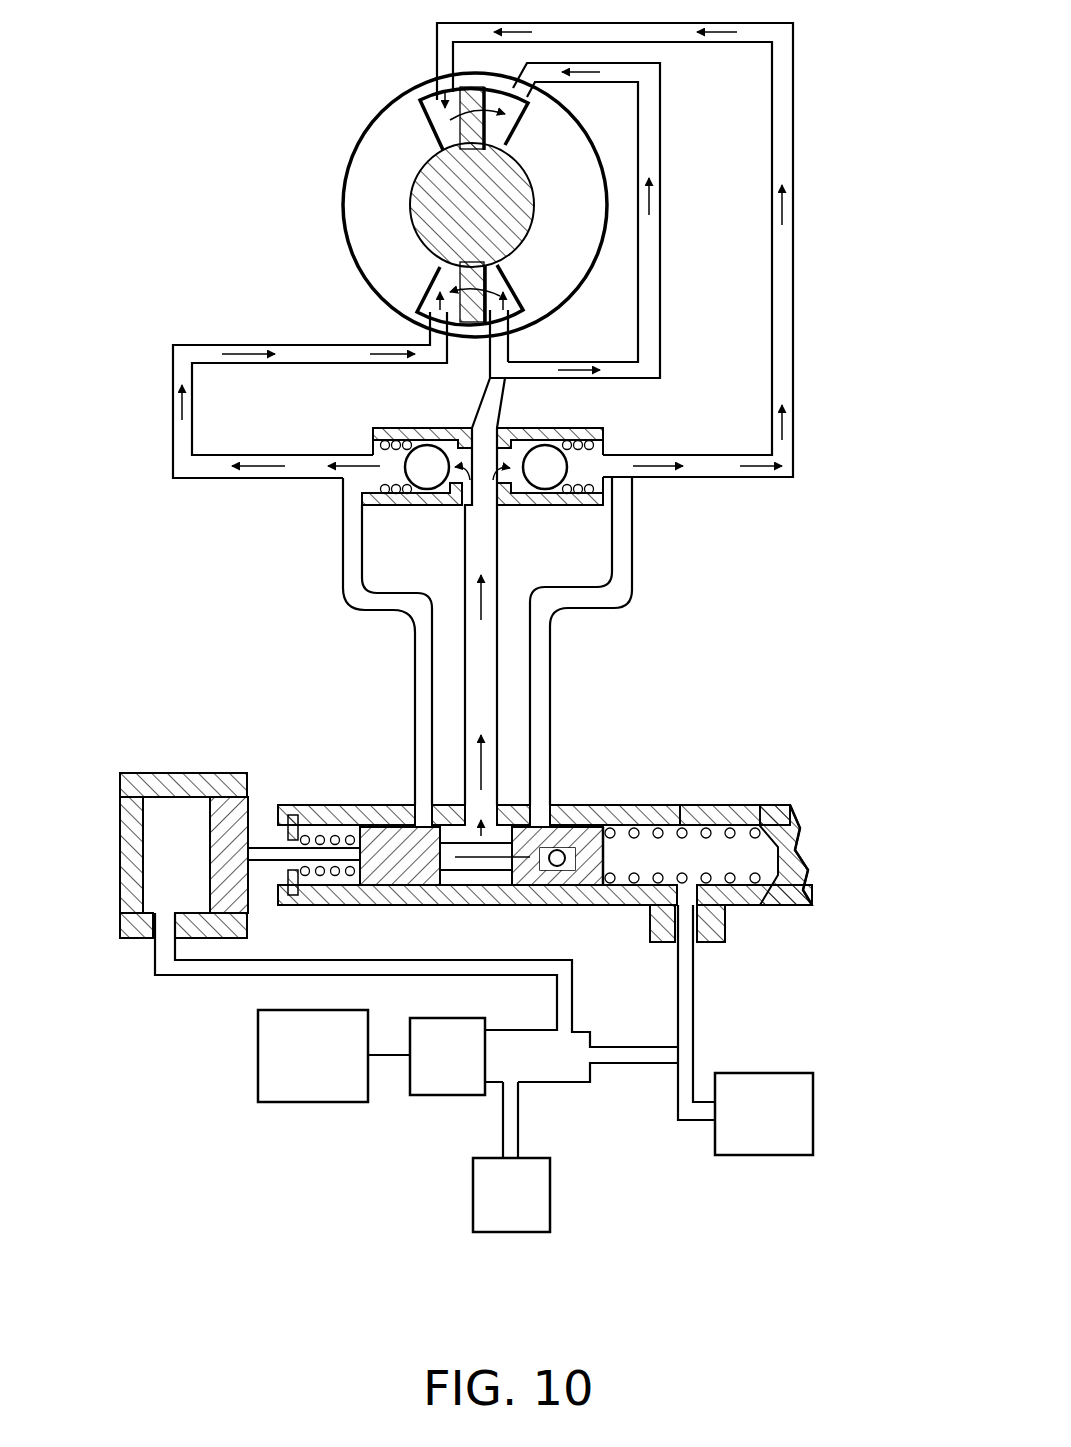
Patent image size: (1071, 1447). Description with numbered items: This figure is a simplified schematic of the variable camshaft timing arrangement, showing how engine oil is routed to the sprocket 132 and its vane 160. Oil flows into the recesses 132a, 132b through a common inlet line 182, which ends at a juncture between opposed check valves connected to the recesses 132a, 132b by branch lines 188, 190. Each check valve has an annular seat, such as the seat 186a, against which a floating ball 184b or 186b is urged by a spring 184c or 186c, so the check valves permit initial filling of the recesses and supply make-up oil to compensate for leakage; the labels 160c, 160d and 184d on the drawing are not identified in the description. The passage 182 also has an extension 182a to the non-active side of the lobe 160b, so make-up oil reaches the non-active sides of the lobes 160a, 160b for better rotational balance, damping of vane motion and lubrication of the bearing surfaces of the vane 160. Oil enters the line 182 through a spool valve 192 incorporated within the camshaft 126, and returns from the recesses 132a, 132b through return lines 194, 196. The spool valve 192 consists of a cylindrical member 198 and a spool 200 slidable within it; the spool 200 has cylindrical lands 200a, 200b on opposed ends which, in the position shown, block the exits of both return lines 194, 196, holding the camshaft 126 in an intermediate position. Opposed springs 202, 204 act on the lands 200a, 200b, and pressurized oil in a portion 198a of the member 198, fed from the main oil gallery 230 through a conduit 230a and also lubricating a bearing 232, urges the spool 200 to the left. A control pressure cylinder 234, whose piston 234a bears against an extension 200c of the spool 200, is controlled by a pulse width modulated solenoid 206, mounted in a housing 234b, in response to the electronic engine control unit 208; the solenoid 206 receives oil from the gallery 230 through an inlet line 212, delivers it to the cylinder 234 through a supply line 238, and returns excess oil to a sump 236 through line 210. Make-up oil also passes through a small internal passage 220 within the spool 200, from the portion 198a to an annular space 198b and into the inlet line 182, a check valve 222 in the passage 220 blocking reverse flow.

The sprocket 132 is at (535, 129).
The recess 132a is at (448, 128).
The recess 132b is at (427, 293).
The vane 160 is at (433, 202).
The lobe 160a is at (440, 140).
The lobe 160b is at (505, 270).
The inner circulation conduit 160c is at (655, 142).
The lower outlet conduit 160d is at (508, 345).
The branch line 188 is at (795, 243).
The branch line 190 is at (330, 352).
The inlet line 182 is at (500, 562).
The extension 182a is at (487, 370).
The annular seat 186a is at (437, 440).
The floating ball 186b is at (423, 467).
The spring 186c is at (383, 507).
The right check valve body upper wall 184d is at (517, 427).
The floating ball 184b is at (573, 462).
The spring 184c is at (583, 530).
The return line 196 is at (363, 593).
The return line 194 is at (617, 594).
The spring 204 is at (332, 825).
The internal passage 220 is at (688, 818).
The spool valve 192 is at (735, 820).
The cylindrical member 198 is at (792, 805).
The spring 202 is at (797, 805).
The camshaft 126 is at (790, 893).
The portion of the cylindrical member 198a is at (752, 847).
The extension of the spool 200c is at (270, 862).
The cylindrical land 200b is at (368, 893).
The spool 200 is at (548, 826).
The annular space 198b is at (507, 905).
The check valve 222 is at (559, 848).
The cylindrical land 200a is at (612, 905).
The control pressure cylinder 234 is at (168, 773).
The piston 234a is at (255, 810).
The housing 234b is at (158, 925).
The supply line 238 is at (217, 978).
The inlet line 212 is at (625, 1058).
The line 210 is at (516, 1143).
The solenoid 206 is at (423, 1078).
The electronic engine control unit 208 is at (330, 1093).
The sump 236 is at (550, 1200).
The main oil gallery 230 is at (768, 1073).
The conduit 230a is at (694, 1013).
The bearing 232 is at (727, 928).